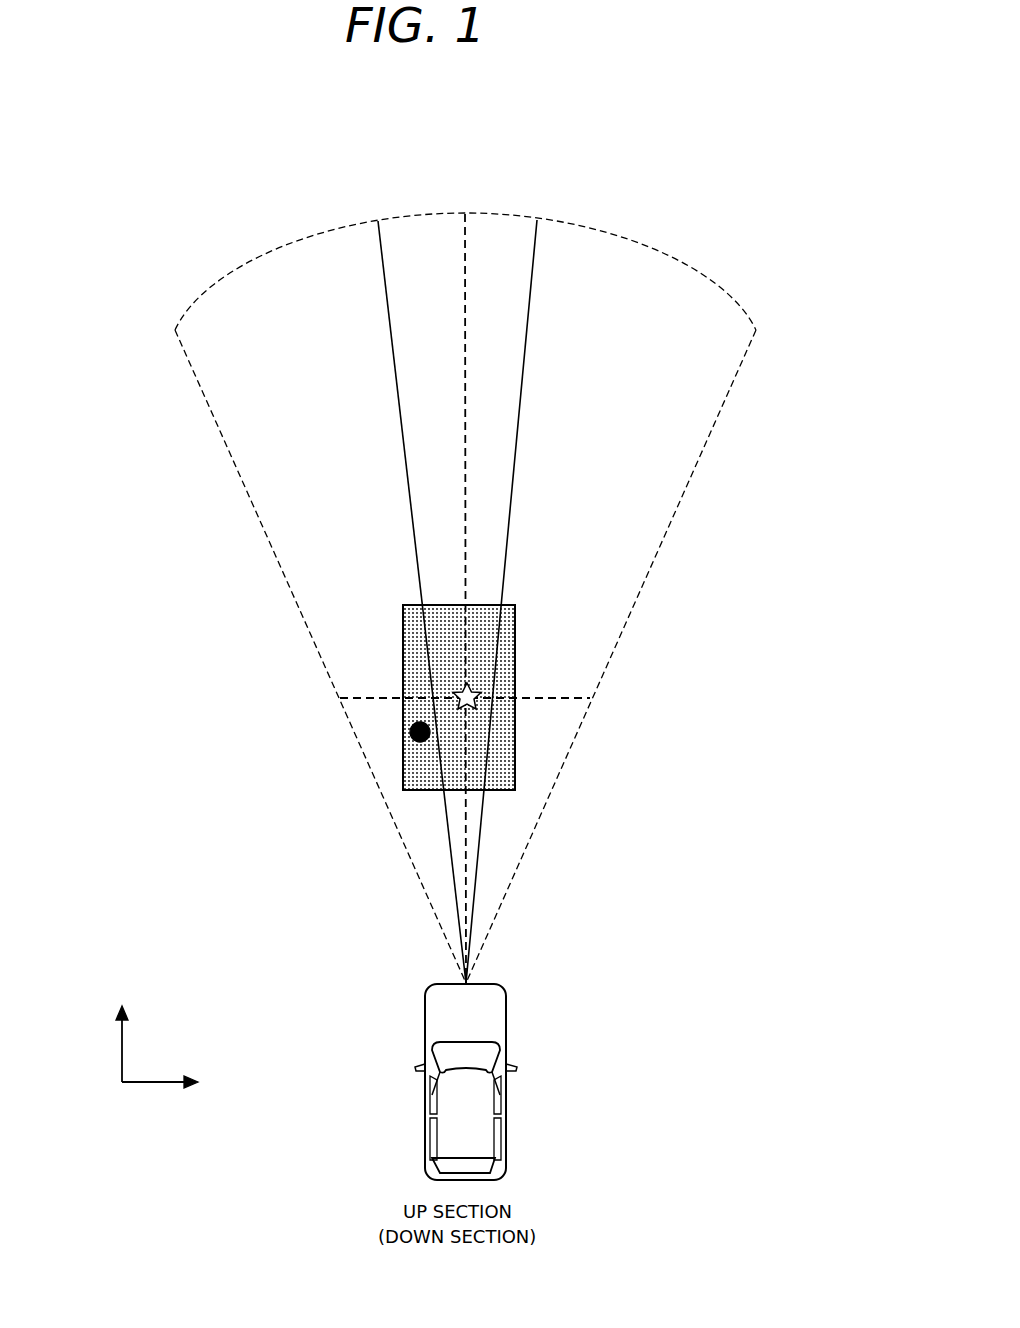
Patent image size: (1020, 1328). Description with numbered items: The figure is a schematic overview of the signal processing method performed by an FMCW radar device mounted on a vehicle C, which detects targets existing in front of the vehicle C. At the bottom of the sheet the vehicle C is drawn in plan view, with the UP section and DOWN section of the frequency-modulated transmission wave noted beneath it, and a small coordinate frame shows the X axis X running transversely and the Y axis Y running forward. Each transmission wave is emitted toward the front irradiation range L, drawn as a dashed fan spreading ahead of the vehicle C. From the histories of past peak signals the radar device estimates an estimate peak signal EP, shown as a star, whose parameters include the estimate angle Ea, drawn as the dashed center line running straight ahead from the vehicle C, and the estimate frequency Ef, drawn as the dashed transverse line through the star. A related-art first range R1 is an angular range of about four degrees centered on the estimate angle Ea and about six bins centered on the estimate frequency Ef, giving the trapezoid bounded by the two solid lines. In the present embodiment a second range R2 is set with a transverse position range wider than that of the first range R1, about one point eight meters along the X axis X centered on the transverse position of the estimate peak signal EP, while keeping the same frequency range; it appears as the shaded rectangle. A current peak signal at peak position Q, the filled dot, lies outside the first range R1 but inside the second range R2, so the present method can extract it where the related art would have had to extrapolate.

The front irradiation range L is at (608, 230).
The estimate angle Ea is at (466, 241).
The first range R1 is at (487, 605).
The second range R2 is at (515, 742).
The estimate peak signal EP is at (474, 692).
The estimate frequency Ef is at (550, 698).
The peak position Q is at (421, 741).
The vehicle C is at (507, 1013).
The X axis X is at (170, 1084).
The Y axis Y is at (120, 1030).